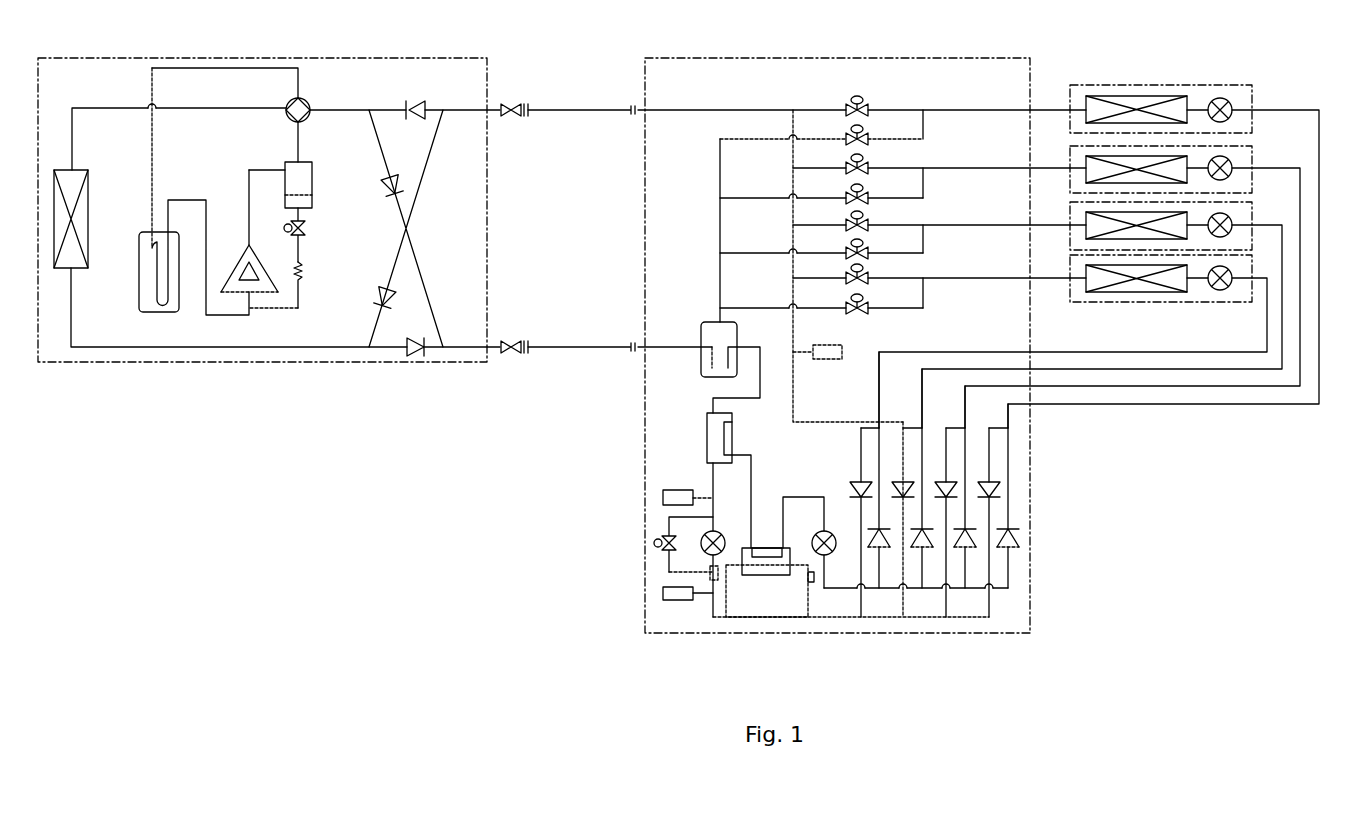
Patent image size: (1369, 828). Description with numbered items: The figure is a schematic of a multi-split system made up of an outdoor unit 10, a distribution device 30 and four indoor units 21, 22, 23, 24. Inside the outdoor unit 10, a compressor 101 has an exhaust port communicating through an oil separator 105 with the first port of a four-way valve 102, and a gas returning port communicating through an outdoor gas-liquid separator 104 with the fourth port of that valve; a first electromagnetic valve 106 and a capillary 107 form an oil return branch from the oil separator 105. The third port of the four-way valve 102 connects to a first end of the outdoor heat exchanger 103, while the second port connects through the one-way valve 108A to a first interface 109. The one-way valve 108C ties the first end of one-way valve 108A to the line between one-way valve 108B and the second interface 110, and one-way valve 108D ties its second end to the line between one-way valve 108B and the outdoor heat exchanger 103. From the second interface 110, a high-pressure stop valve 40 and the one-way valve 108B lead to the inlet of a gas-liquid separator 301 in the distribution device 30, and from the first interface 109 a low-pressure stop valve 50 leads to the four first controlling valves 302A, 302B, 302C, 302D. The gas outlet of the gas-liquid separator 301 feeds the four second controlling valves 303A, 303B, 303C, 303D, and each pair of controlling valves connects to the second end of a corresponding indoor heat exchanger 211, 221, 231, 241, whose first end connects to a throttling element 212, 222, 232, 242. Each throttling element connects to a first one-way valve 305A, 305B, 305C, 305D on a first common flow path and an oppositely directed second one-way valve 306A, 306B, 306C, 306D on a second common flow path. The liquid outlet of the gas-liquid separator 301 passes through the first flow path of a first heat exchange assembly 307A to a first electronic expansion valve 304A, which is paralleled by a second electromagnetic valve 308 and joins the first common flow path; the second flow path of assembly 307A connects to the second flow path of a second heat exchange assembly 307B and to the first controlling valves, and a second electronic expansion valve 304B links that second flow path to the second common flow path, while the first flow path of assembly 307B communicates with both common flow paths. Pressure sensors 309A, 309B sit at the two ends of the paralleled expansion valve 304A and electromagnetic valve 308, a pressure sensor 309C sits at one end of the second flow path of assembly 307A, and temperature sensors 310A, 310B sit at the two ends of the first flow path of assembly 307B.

The outdoor unit 10 is at (265, 58).
The distribution device 30 is at (838, 58).
The high-pressure stop valve 40 is at (509, 347).
The low-pressure stop valve 50 is at (511, 113).
The compressor 101 is at (247, 244).
The four-way valve 102 is at (291, 118).
The outdoor heat exchanger 103 is at (90, 240).
The outdoor gas-liquid separator 104 is at (152, 277).
The oil separator 105 is at (301, 175).
The first electromagnetic valve 106 is at (304, 232).
The capillary 107 is at (303, 272).
The one-way valve 108A is at (411, 101).
The one-way valve 108B is at (410, 356).
The one-way valve 108C is at (389, 186).
The one-way valve 108D is at (386, 295).
The first interface 109 is at (500, 110).
The second interface 110 is at (494, 350).
The indoor unit 21 is at (1185, 85).
The indoor heat exchanger 211 is at (1133, 100).
The throttling element 212 is at (1222, 98).
The indoor unit 22 is at (1254, 150).
The indoor heat exchanger 221 is at (1095, 160).
The throttling element 222 is at (1226, 172).
The indoor unit 23 is at (1254, 212).
The indoor heat exchanger 231 is at (1095, 220).
The throttling element 232 is at (1227, 232).
The indoor unit 24 is at (1160, 302).
The indoor heat exchanger 241 is at (1120, 292).
The throttling element 242 is at (1220, 292).
The gas-liquid separator 301 is at (711, 333).
The first controlling valve 302A is at (863, 98).
The first controlling valve 302B is at (863, 156).
The first controlling valve 302C is at (863, 214).
The first controlling valve 302D is at (863, 268).
The second controlling valve 303A is at (863, 127).
The second controlling valve 303B is at (863, 186).
The second controlling valve 303C is at (863, 242).
The second controlling valve 303D is at (863, 298).
The first electronic expansion valve 304A is at (702, 548).
The second electronic expansion valve 304B is at (828, 531).
The first one-way valve 305A is at (985, 481).
The first one-way valve 305B is at (942, 481).
The first one-way valve 305C is at (899, 481).
The first one-way valve 305D is at (856, 481).
The second one-way valve 306A is at (1016, 545).
The second one-way valve 306B is at (969, 548).
The second one-way valve 306C is at (905, 590).
The second one-way valve 306D is at (872, 548).
The first heat exchange assembly 307A is at (707, 435).
The second heat exchange assembly 307B is at (770, 576).
The second electromagnetic valve 308 is at (662, 542).
The pressure sensor 309A is at (690, 490).
The pressure sensor 309B is at (682, 605).
The pressure sensor 309C is at (838, 345).
The temperature sensor 310A is at (716, 583).
The temperature sensor 310B is at (808, 578).